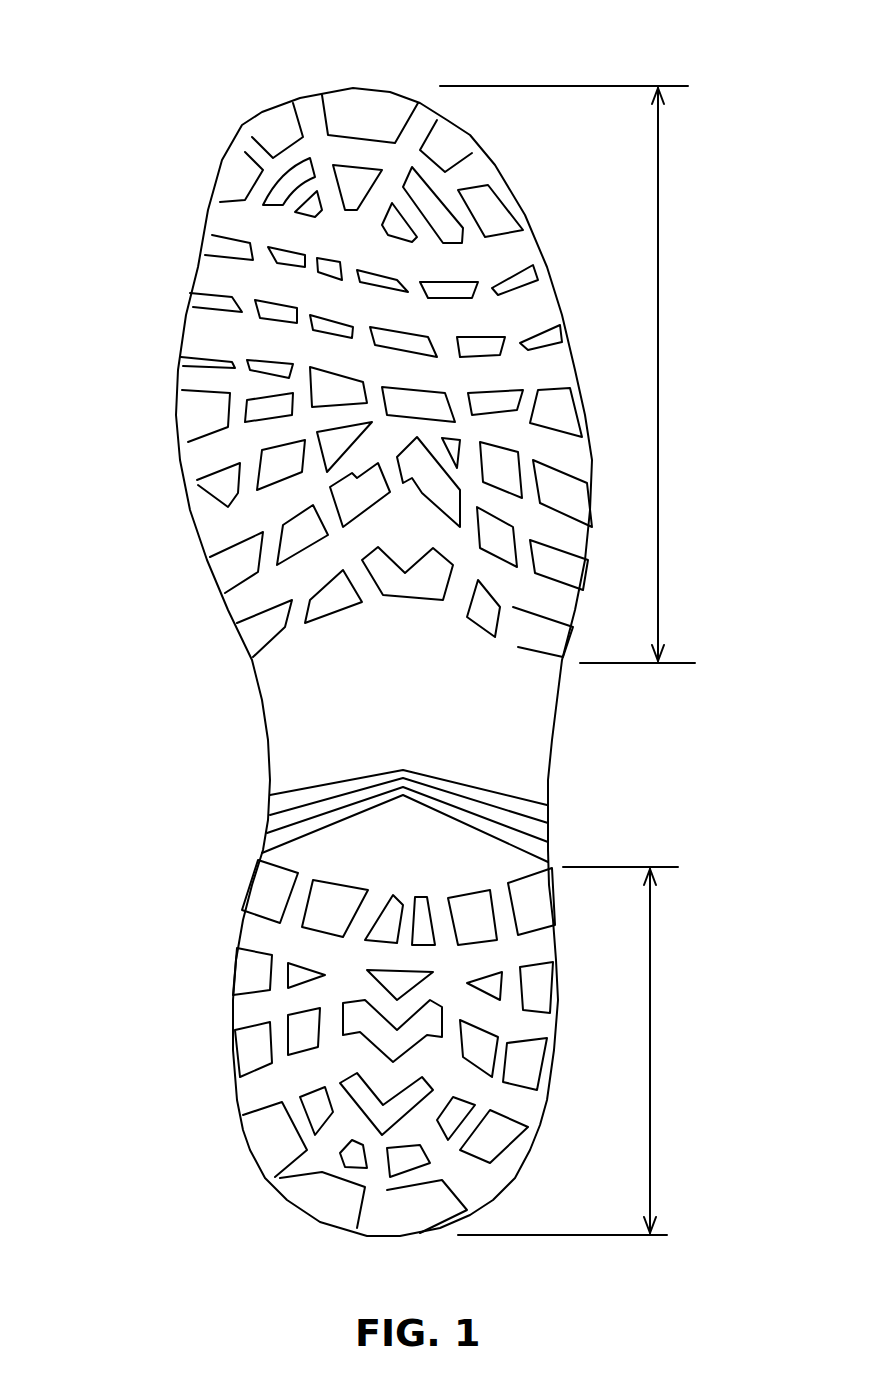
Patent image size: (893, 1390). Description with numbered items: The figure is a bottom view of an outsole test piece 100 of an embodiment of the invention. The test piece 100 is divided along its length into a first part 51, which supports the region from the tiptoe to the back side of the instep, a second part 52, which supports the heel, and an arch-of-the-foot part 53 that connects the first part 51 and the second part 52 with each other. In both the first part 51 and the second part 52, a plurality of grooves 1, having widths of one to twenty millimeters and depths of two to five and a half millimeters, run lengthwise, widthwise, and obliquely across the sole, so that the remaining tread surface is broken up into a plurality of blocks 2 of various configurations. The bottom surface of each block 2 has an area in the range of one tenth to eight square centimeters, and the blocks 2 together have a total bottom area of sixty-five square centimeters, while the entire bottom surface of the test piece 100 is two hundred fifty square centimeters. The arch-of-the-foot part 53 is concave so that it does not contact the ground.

The test piece 100 is at (401, 68).
The groove 1 is at (210, 270).
The block 2 is at (258, 356).
The first part 51 is at (658, 348).
The second part 52 is at (650, 1058).
The arch-of-the-foot part 53 is at (535, 745).